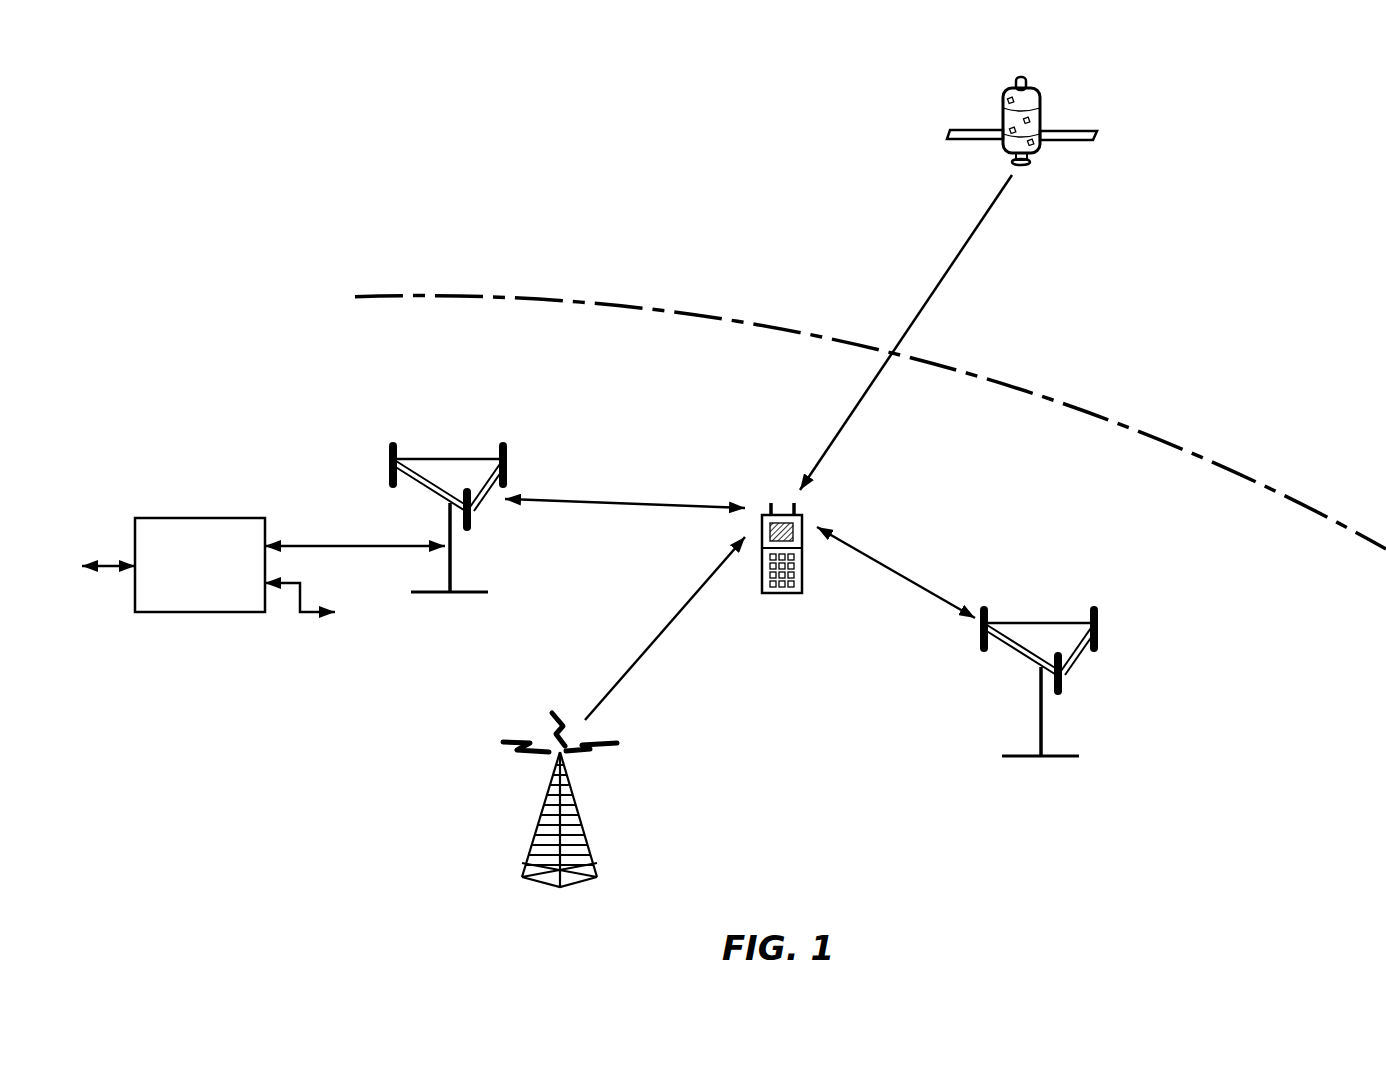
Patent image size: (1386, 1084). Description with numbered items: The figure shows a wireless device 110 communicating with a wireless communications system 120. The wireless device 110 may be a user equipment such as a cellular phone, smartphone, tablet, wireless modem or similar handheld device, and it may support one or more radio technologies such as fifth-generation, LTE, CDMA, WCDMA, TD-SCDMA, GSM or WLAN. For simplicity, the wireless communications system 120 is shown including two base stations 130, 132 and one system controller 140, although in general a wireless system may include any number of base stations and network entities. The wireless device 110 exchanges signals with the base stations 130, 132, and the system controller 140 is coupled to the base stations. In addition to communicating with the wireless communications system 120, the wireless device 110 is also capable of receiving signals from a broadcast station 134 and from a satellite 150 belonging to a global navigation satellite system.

The wireless device 110 is at (801, 585).
The wireless communications system 120 is at (393, 390).
The base station 130 is at (446, 456).
The base station 132 is at (1037, 620).
The broadcast station 134 is at (589, 831).
The system controller 140 is at (197, 516).
The satellite 150 is at (1086, 115).